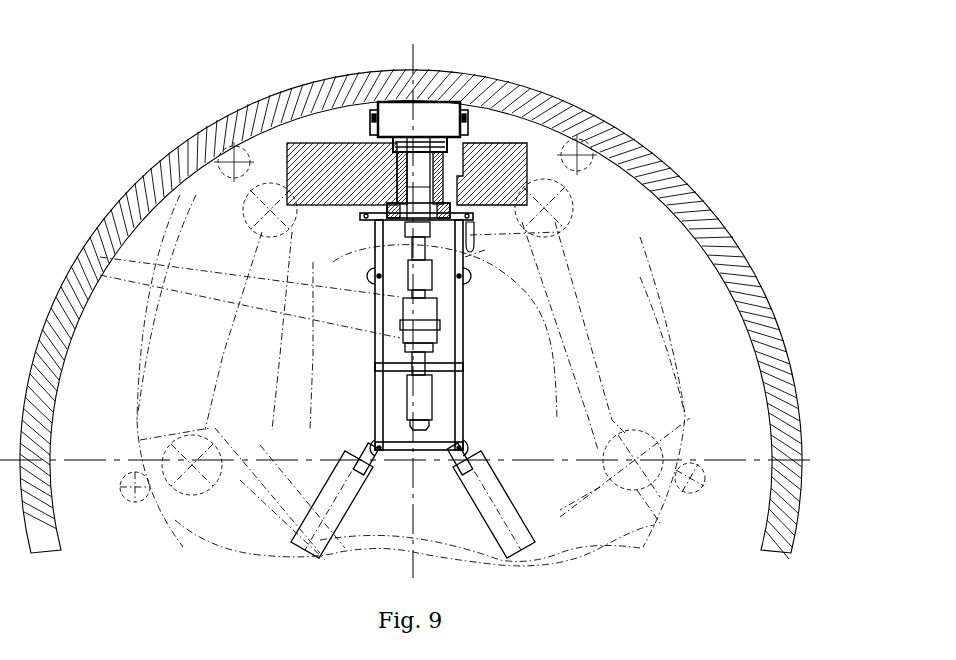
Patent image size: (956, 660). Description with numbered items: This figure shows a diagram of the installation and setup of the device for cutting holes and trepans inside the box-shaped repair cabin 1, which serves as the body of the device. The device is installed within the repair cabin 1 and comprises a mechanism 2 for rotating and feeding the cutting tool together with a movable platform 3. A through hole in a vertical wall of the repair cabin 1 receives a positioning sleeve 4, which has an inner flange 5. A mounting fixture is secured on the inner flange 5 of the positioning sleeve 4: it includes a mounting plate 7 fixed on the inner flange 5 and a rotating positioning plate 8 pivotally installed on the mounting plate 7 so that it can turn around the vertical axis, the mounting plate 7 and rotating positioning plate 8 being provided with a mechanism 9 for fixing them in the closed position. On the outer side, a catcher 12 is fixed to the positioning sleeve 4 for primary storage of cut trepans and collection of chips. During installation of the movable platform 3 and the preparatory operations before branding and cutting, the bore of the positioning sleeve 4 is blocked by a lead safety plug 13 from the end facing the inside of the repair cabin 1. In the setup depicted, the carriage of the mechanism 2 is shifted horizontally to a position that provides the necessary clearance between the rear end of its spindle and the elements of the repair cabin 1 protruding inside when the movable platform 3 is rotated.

The repair cabin 1 is at (388, 108).
The mechanism for rotating and feeding the cutting tool 2 is at (75, 96).
The movable platform 3 is at (22, 232).
The positioning sleeve 4 is at (493, 133).
The inner flange 5 is at (423, 133).
The mounting plate 7 is at (578, 229).
The rotating positioning plate 8 is at (551, 293).
The mechanism for fixing in the closed position 9 is at (593, 152).
The catcher 12 is at (520, 200).
The lead safety plug 13 is at (28, 200).